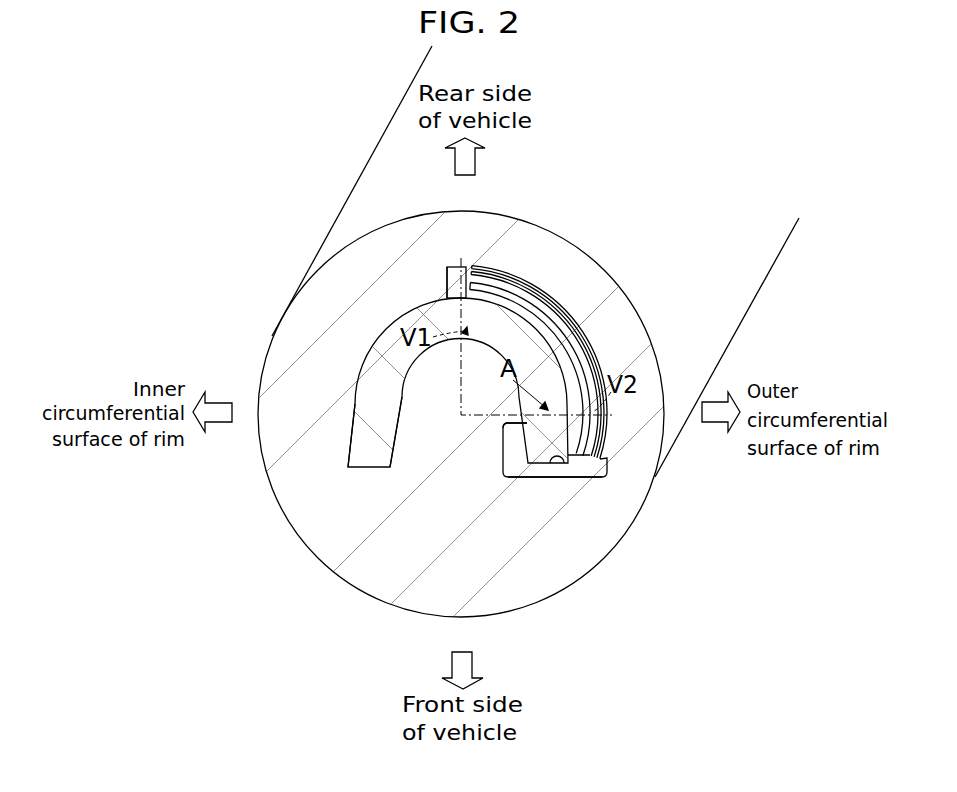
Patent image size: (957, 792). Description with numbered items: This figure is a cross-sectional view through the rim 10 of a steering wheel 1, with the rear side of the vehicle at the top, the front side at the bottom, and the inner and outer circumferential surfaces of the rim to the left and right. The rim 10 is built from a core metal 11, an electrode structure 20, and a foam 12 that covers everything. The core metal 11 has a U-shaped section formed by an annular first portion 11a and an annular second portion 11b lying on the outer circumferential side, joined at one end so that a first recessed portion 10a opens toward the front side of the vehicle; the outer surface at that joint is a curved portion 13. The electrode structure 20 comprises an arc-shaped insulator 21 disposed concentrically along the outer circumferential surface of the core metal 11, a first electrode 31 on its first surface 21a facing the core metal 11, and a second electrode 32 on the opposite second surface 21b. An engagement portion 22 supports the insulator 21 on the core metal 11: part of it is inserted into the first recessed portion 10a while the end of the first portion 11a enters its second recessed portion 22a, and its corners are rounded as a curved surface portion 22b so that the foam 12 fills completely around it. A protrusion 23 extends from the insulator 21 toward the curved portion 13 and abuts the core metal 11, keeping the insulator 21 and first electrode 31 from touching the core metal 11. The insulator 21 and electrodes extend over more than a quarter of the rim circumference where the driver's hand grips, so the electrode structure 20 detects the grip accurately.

The steering wheel 1 is at (357, 184).
The rim 10 is at (460, 425).
The first recessed portion 10a is at (414, 407).
The core metal 11 is at (485, 460).
The first portion 11a is at (540, 456).
The second portion 11b is at (353, 468).
The foam 12 is at (290, 468).
The curved portion 13 is at (447, 288).
The electrode structure 20 is at (474, 398).
The insulator 21 is at (571, 323).
The first surface 21a is at (540, 270).
The second surface 21b is at (508, 280).
The engagement portion 22 is at (538, 520).
The second recessed portion 22a is at (606, 457).
The curved surface portion 22b is at (502, 426).
The protrusion 23 is at (458, 266).
The first electrode 31 is at (578, 325).
The second electrode 32 is at (538, 287).